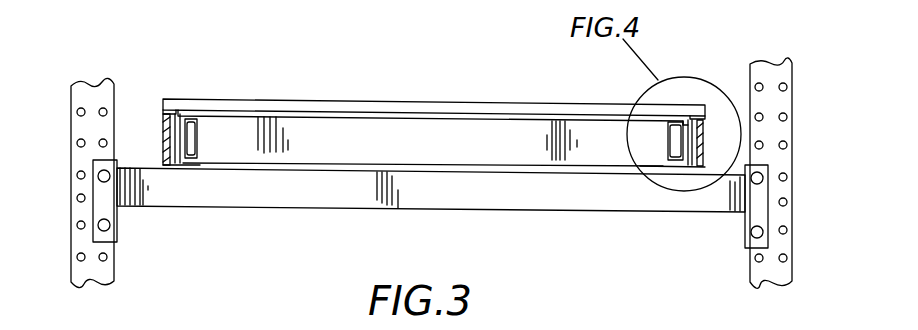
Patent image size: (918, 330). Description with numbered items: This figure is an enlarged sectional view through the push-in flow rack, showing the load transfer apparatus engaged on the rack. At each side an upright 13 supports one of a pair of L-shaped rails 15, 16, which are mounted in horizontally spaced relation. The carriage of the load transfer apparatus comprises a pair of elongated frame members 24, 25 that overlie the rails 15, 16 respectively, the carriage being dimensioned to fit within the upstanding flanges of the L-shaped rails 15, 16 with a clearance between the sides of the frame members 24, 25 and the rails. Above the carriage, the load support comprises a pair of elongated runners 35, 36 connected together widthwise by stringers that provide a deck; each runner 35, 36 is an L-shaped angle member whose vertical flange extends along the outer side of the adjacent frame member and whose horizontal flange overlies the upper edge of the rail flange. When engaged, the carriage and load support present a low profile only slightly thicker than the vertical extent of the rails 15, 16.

The upright 13 is at (101, 98).
The L-shaped rail 15 is at (697, 167).
The L-shaped rail 16 is at (170, 167).
The frame member 24 is at (667, 157).
The frame member 25 is at (200, 146).
The runner 35 is at (688, 130).
The runner 36 is at (176, 112).